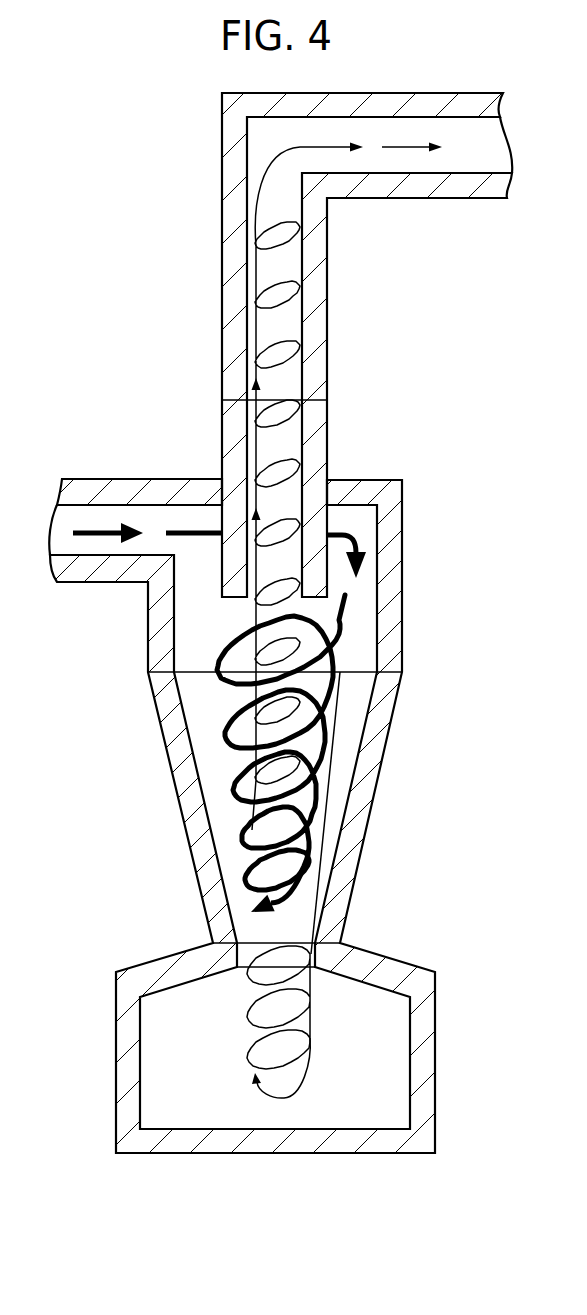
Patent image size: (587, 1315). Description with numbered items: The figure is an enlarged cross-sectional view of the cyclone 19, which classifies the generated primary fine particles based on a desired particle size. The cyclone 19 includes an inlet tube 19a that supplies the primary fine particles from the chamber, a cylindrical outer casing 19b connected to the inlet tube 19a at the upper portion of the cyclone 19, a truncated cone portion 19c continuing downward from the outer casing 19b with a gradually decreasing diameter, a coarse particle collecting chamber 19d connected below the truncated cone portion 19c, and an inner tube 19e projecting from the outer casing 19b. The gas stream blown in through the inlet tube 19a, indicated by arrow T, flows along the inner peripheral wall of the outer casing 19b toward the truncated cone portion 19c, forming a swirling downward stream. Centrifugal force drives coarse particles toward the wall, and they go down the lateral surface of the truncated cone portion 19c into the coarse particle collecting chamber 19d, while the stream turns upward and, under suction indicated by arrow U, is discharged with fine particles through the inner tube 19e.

The cyclone 19 is at (484, 334).
The inlet tube 19a is at (105, 545).
The cylindrical outer casing 19b is at (402, 588).
The truncated cone portion 19c is at (367, 789).
The coarse particle collecting chamber 19d is at (435, 1033).
The inner tube 19e is at (327, 283).